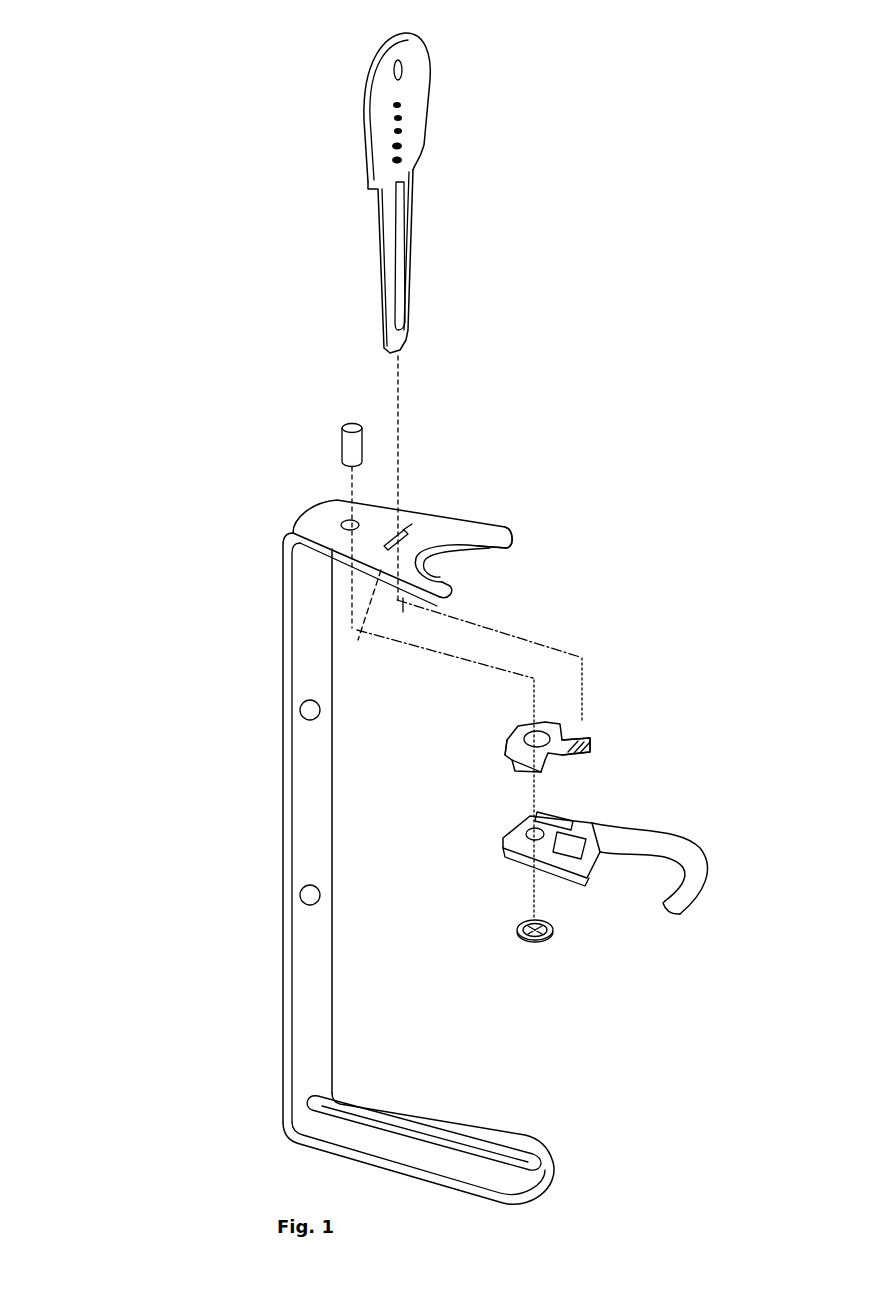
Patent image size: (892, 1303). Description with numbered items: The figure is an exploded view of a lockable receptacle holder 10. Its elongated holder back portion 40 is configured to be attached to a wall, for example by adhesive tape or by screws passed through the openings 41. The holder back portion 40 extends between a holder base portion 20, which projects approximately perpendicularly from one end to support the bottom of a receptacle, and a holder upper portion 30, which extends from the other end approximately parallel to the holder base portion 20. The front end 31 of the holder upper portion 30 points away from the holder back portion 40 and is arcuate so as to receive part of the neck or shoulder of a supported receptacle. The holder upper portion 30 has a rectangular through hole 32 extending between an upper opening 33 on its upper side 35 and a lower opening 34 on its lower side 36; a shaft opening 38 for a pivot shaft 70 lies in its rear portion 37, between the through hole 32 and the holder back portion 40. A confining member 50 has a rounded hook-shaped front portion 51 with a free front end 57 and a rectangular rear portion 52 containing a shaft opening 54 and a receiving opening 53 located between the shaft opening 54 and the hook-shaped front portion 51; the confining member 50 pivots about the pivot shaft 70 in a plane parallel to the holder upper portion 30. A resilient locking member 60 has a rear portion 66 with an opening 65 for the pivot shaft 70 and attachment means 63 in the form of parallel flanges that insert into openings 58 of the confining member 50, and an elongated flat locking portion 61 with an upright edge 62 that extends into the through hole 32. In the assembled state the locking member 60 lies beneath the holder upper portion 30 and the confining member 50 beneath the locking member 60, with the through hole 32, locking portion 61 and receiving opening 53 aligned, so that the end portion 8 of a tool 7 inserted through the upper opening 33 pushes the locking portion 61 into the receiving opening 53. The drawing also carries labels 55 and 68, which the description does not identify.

The tool 7 is at (346, 147).
The end portion of the tool 8 is at (388, 350).
The lockable receptacle holder 10 is at (176, 500).
The holder base portion 20 is at (495, 1133).
The holder upper portion 30 is at (438, 504).
The front end of the holder upper portion 31 is at (492, 540).
The through hole 32 is at (408, 527).
The upper opening 33 is at (388, 535).
The lower opening 34 is at (361, 619).
The upper side of the holder upper portion 35 is at (428, 533).
The lower side of the holder upper portion 36 is at (437, 550).
The rear portion of the holder upper portion 37 is at (336, 506).
The shaft opening 38 is at (340, 523).
The holder back portion 40 is at (270, 777).
The openings 41 is at (300, 708).
The confining member 50 is at (650, 822).
The hook-shaped front portion 51 is at (708, 853).
The rear portion of the confining member 52 is at (503, 831).
The receiving opening 53 is at (581, 842).
The shaft opening of the confining member 54 is at (529, 838).
The hook body 55 is at (598, 855).
The free front end 57 is at (674, 911).
The openings 58 is at (563, 826).
The locking member 60 is at (503, 750).
The locking portion 61 is at (578, 741).
The upright edge 62 is at (582, 748).
The attachment means 63 is at (522, 760).
The opening for the pivot shaft 65 is at (522, 737).
The rear portion of the locking member 66 is at (527, 723).
The phantom outline 68 is at (469, 759).
The pivot shaft 70 is at (341, 430).